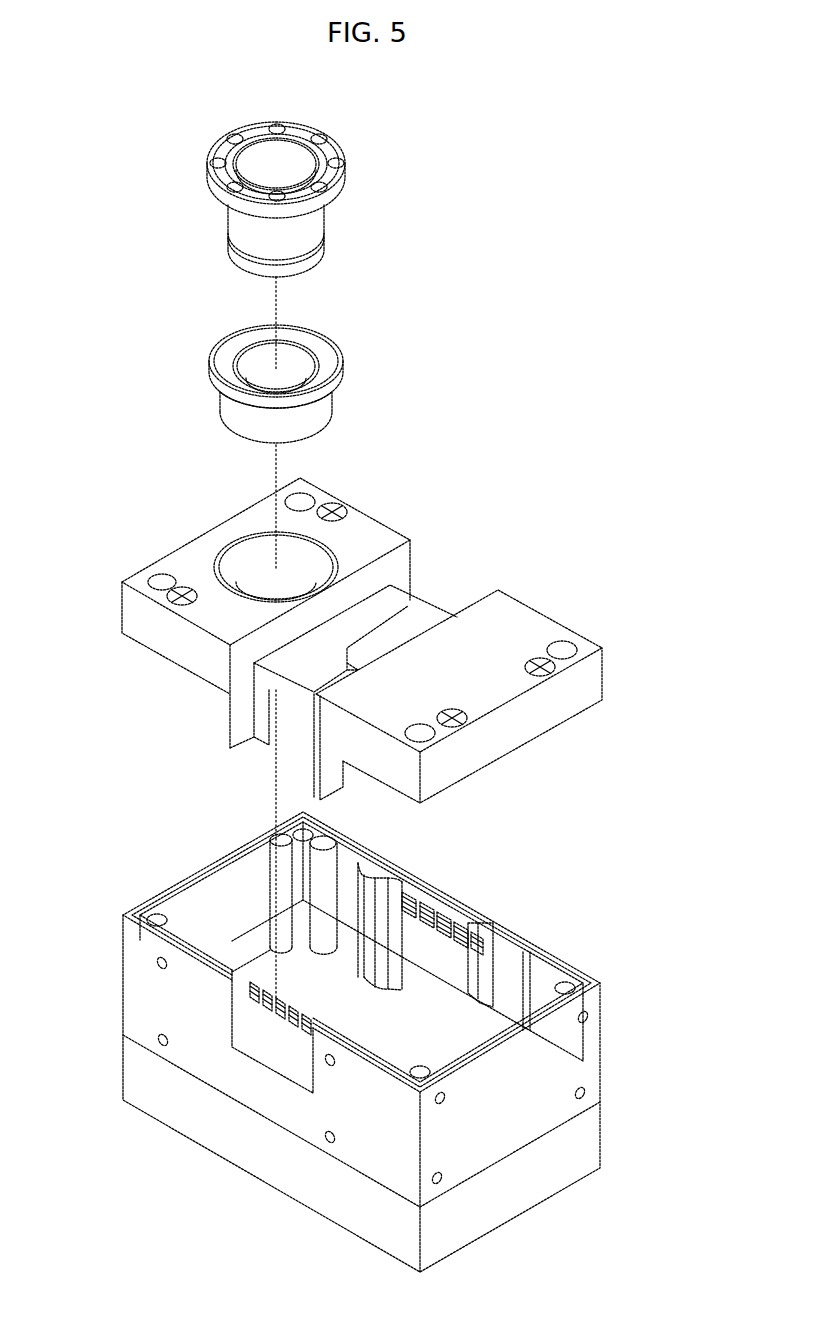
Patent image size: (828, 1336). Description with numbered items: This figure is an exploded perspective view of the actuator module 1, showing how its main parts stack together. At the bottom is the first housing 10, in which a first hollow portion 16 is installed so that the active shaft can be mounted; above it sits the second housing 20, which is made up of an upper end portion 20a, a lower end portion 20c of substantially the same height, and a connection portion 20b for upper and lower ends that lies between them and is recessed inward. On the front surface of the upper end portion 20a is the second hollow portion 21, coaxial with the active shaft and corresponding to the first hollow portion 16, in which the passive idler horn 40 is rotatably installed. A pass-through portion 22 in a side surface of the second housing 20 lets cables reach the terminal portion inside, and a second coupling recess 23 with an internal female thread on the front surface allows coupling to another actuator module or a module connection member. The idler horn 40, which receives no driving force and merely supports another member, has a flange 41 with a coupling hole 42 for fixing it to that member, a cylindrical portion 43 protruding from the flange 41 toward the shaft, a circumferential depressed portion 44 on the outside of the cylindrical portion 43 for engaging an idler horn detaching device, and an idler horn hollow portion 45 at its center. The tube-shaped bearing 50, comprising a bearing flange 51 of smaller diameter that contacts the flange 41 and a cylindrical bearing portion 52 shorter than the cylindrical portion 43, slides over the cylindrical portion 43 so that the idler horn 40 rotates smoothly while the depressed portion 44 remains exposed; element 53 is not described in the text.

The actuator module 1 is at (134, 94).
The first housing 10 is at (168, 861).
The first hollow portion 16 is at (318, 1010).
The second housing 20 is at (178, 515).
The upper end portion 20a is at (137, 617).
The connection portion for upper and lower ends 20b is at (382, 603).
The lower end portion 20c is at (505, 623).
The second hollow portion 21 is at (294, 557).
The pass-through portion 22 is at (295, 737).
The second coupling recess 23 is at (421, 731).
The passive idler horn 40 is at (353, 144).
The flange 41 is at (325, 164).
The coupling hole 42 is at (341, 162).
The cylindrical portion 43 is at (303, 225).
The depressed portion 44 is at (306, 263).
The idler horn hollow portion 45 is at (281, 174).
The tube-shaped bearing 50 is at (425, 313).
The bearing flange 51 is at (330, 366).
The cylindrical bearing portion 52 is at (313, 413).
The sleeve opening 53 is at (290, 348).